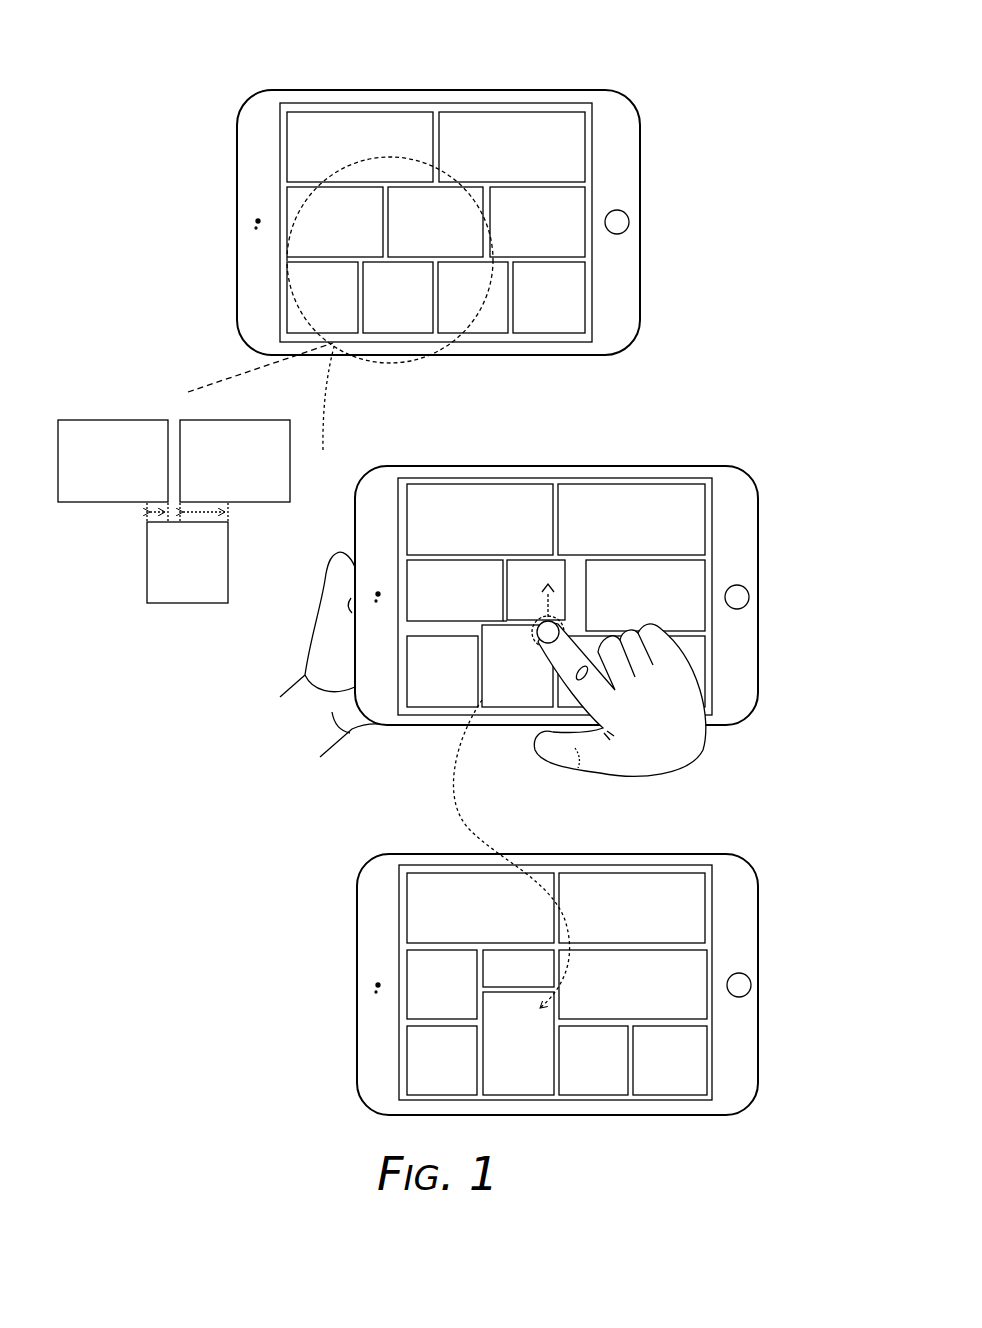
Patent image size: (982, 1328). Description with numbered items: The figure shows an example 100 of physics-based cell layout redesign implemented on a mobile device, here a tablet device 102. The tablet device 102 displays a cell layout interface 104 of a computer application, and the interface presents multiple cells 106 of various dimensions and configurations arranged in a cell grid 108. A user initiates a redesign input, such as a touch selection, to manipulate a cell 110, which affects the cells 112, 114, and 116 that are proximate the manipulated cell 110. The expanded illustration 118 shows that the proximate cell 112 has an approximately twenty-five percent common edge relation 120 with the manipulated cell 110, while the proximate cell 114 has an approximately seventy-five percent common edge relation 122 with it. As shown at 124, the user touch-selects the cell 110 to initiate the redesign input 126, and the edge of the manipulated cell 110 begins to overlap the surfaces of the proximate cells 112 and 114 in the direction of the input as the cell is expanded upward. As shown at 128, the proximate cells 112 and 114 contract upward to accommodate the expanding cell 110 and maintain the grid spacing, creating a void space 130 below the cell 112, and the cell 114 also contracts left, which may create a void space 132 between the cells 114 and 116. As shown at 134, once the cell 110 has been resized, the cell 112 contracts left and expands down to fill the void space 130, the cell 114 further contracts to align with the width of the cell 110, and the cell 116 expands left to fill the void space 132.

The example of physics-based cell layout redesign 100 is at (578, 60).
The tablet device 102 is at (482, 90).
The cell layout interface 104 is at (345, 103).
The cells 106 is at (455, 125).
The cell grid 108 is at (283, 165).
The manipulated cell 110 is at (358, 678).
The proximate cell 112 is at (280, 603).
The proximate cell 114 is at (527, 582).
The cell 116 is at (598, 603).
The expanded illustration 118 is at (143, 390).
The common edge relation 120 is at (148, 525).
The common edge relation 122 is at (215, 525).
The view of cell overlap during redesign input 124 is at (698, 435).
The redesign input 126 is at (557, 585).
The view of proximate cells contracting 128 is at (505, 618).
The void space 130 is at (454, 628).
The void space 132 is at (573, 608).
The view of resized cell layout 134 is at (698, 823).